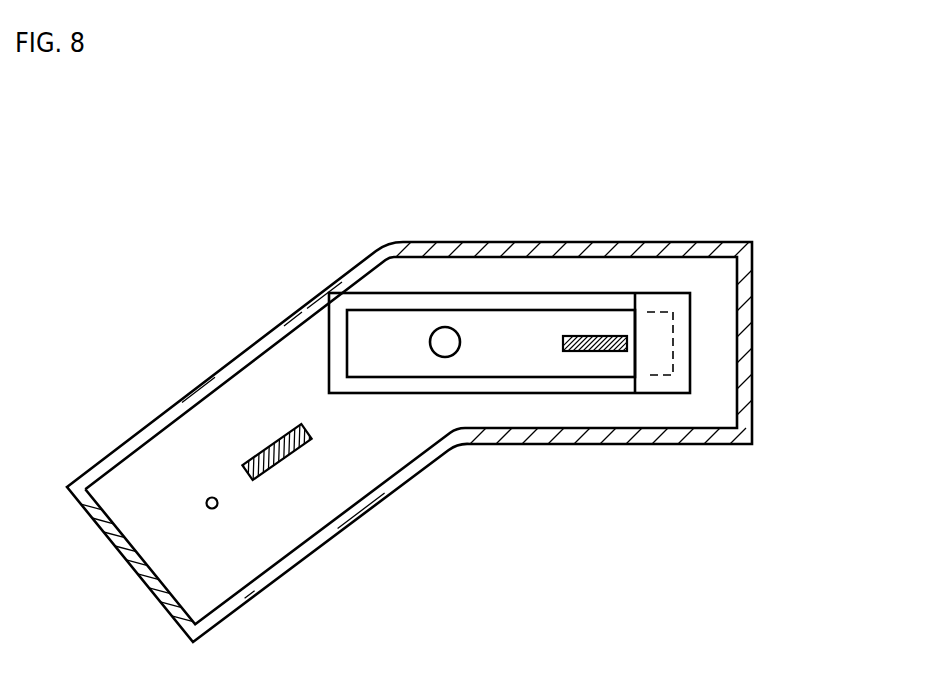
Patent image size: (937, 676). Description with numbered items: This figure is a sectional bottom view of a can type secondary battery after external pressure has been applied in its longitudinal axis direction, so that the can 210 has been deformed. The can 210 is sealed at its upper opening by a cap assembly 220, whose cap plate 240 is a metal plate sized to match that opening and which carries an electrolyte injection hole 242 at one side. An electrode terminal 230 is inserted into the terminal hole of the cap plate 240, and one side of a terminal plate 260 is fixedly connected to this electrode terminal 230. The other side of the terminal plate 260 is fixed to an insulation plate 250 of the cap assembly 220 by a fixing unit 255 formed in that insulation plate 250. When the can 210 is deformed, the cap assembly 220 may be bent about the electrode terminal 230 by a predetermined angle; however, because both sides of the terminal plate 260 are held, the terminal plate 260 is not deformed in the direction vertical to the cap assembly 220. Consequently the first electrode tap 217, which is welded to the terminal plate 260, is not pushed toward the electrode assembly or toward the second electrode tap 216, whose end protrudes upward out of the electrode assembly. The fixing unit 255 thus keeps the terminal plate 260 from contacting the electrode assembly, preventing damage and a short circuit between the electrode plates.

The can 210 is at (297, 560).
The second electrode tap 216 is at (260, 448).
The first electrode tap 217 is at (580, 335).
The cap assembly 220 is at (763, 203).
The electrode terminal 230 is at (445, 327).
The cap plate 240 is at (718, 335).
The electrolyte injection hole 242 is at (205, 503).
The insulation plate 250 is at (613, 300).
The fixing unit 255 is at (658, 360).
The terminal plate 260 is at (497, 358).